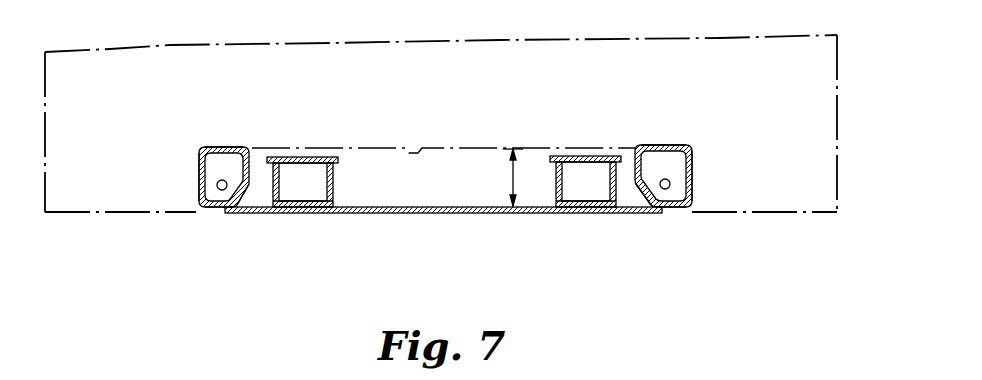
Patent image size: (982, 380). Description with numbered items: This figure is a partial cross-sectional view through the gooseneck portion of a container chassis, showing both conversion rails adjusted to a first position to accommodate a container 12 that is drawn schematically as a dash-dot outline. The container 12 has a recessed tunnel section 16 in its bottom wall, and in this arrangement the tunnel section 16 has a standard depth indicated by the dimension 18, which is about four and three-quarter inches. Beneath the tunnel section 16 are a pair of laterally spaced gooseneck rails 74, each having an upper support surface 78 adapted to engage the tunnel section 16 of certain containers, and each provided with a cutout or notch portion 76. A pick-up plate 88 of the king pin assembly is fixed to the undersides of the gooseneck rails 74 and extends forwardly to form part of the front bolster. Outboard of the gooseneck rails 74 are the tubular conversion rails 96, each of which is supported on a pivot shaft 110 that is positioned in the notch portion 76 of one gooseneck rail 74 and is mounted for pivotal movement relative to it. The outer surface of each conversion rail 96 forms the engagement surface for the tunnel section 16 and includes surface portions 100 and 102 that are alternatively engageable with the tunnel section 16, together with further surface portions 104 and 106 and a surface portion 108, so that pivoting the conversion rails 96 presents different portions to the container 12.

The container 12 is at (842, 43).
The recessed tunnel section 16 is at (425, 150).
The tunnel depth 18 is at (505, 174).
The gooseneck rails 74 is at (334, 190).
The notch portions 76 is at (248, 208).
The upper support surface 78 is at (326, 156).
The pick-up plate 88 is at (437, 214).
The tubular conversion rail 96 is at (194, 142).
The outer surface portion 100 is at (665, 146).
The outer surface portion 102 is at (198, 158).
The surface portion 104 is at (210, 207).
The surface portion 106 is at (252, 150).
The surface portion 108 is at (238, 205).
The pivot shaft 110 is at (219, 148).